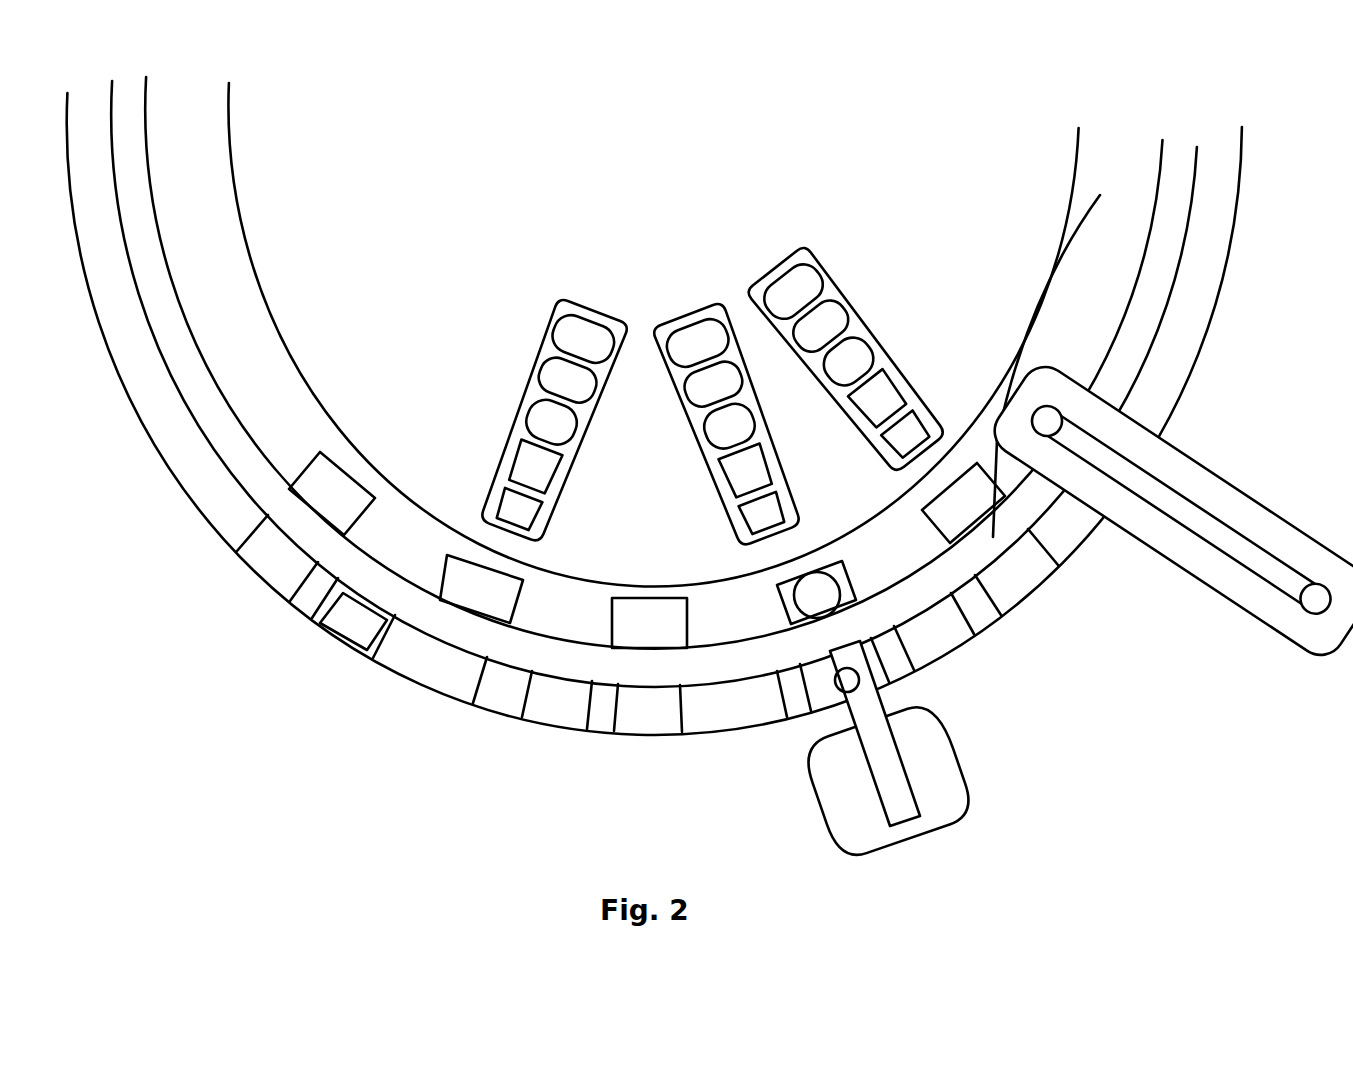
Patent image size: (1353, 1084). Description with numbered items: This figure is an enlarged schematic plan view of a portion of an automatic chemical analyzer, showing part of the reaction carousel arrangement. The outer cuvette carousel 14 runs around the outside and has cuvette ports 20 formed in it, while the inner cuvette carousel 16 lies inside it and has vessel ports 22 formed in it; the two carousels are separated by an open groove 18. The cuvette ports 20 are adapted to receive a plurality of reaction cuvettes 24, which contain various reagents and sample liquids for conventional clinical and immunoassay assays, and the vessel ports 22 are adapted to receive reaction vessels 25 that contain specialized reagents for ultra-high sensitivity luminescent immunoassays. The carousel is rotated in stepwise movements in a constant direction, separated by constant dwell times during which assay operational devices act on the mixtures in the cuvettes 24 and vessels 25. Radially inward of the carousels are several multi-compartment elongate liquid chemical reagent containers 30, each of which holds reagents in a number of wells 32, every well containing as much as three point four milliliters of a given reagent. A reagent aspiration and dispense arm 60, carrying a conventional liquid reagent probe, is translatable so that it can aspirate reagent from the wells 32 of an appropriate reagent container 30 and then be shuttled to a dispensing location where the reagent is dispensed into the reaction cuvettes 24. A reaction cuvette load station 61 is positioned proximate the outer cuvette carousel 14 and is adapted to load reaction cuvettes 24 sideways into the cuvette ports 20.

The outer cuvette carousel 14 is at (1073, 537).
The inner cuvette carousel 16 is at (432, 536).
The open groove 18 is at (1057, 351).
The cuvette ports 20 is at (248, 597).
The vessel ports 22 is at (621, 647).
The reaction cuvettes 24 is at (345, 637).
The reaction vessels 25 is at (815, 612).
The reagent containers 30 is at (717, 373).
The wells 32 is at (848, 358).
The reagent aspiration and dispense arm 60 is at (1252, 632).
The reaction cuvette load station 61 is at (962, 798).